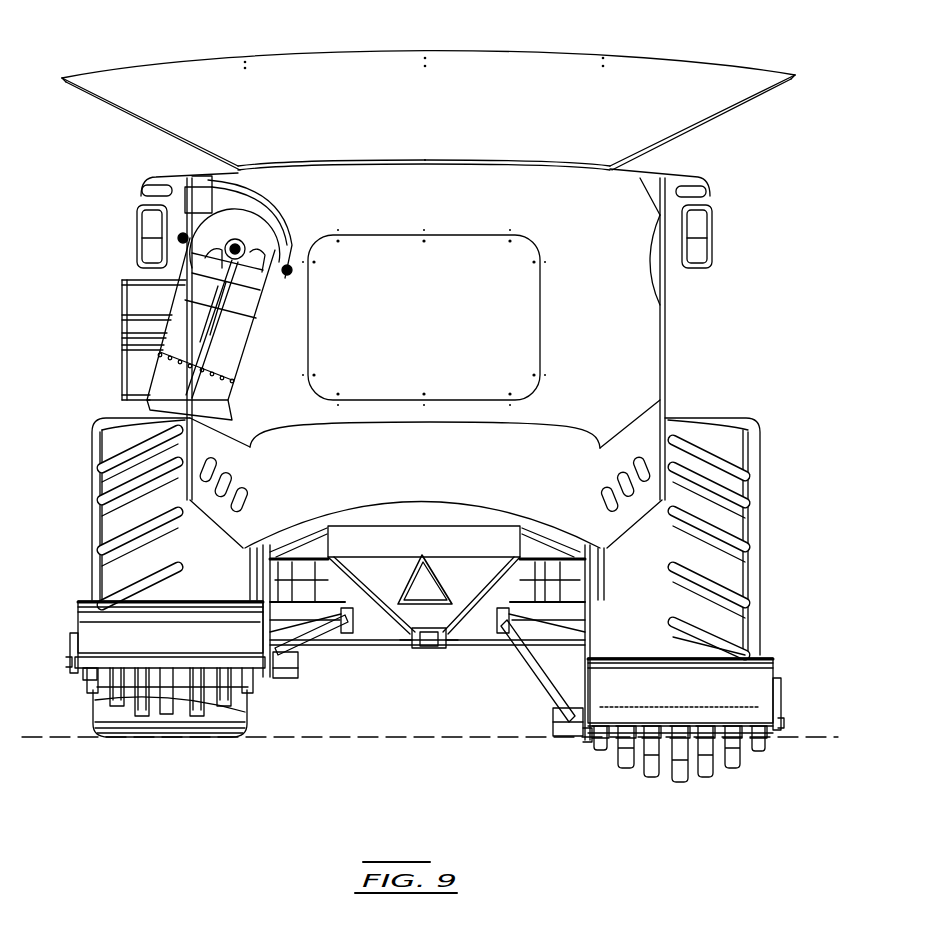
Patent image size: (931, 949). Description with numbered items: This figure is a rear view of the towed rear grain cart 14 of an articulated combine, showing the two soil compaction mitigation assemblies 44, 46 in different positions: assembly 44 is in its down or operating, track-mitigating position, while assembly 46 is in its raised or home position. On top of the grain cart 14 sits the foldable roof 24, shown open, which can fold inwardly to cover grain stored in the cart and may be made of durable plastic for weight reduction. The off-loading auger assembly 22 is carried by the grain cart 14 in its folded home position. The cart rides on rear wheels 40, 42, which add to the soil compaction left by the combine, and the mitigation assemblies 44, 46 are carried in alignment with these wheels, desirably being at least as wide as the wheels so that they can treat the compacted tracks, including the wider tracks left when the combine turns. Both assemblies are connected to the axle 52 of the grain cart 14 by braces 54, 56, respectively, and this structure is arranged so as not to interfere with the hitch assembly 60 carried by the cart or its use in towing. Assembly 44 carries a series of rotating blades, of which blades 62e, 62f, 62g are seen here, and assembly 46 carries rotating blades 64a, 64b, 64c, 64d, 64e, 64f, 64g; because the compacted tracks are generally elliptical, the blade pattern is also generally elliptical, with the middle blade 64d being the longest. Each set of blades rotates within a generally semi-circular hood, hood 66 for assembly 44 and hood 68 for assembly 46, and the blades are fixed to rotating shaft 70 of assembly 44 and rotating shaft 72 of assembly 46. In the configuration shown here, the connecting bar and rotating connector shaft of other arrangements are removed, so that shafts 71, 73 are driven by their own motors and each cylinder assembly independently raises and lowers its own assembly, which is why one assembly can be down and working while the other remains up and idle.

The rear grain cart 14 is at (108, 48).
The off-loading auger assembly 22 is at (182, 323).
The foldable roof 24 is at (712, 121).
The rear wheel 40 is at (735, 483).
The rear wheel 42 is at (115, 518).
The soil compaction mitigation assembly 44 is at (695, 731).
The soil compaction mitigation assembly 46 is at (413, 717).
The axle 52 is at (370, 620).
The brace 54 is at (540, 662).
The brace 56 is at (312, 642).
The hitch assembly 60 is at (431, 648).
The rotating blade 62e is at (642, 780).
The rotating blade 62f is at (618, 775).
The rotating blade 62g is at (598, 760).
The rotating blade 64a is at (250, 702).
The rotating blade 64b is at (228, 735).
The rotating blade 64c is at (200, 738).
The rotating blade 64d is at (182, 740).
The rotating blade 64e is at (142, 740).
The rotating blade 64f is at (118, 740).
The rotating blade 64g is at (88, 696).
The semi-circular hood 66 is at (762, 672).
The semi-circular hood 68 is at (95, 640).
The rotating shaft 70 is at (588, 742).
The shaft 71 is at (560, 718).
The rotating shaft 72 is at (82, 670).
The shaft 73 is at (292, 682).